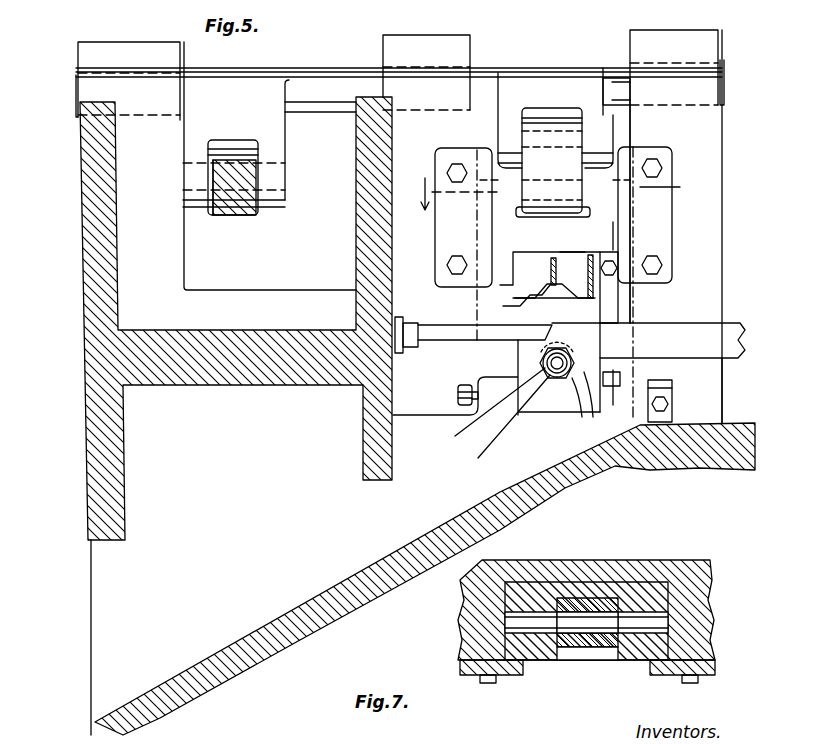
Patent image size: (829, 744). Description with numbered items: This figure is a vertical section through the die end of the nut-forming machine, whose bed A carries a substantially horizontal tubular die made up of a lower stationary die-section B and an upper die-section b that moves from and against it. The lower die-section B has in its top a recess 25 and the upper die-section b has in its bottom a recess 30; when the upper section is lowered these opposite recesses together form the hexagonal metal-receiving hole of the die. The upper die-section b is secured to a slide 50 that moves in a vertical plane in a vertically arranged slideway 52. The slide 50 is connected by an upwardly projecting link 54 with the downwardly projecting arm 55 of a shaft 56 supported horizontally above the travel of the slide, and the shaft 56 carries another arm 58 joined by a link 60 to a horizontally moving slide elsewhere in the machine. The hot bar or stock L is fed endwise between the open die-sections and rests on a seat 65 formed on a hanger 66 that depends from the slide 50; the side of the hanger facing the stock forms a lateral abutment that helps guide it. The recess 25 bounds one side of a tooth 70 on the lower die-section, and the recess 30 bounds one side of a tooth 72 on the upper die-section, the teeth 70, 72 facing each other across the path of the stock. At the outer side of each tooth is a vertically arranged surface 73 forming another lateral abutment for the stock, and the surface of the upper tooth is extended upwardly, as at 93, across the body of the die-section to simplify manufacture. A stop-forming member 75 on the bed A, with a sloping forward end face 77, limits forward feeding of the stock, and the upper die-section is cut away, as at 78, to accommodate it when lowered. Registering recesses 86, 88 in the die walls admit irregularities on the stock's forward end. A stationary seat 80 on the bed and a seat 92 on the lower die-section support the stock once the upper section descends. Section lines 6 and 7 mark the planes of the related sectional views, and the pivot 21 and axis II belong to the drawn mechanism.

In FIG. 5, the bed A is at (85, 450).
In FIG. 5, the shaft 56 is at (78, 97).
In FIG. 5, the slideway 52 is at (633, 128).
In FIG. 7, the slideway 52 is at (682, 590).
In FIG. 5, the arm 58 is at (285, 152).
In FIG. 5, the link 60 is at (238, 215).
In FIG. 5, the slide 50 is at (612, 203).
In FIG. 7, the slide 50 is at (628, 590).
In FIG. 5, the link 54 is at (617, 172).
In FIG. 7, the link 54 is at (595, 645).
In FIG. 5, the arm 55 is at (593, 118).
In FIG. 5, the section line 7— 7 is at (546, 194).
In FIG. 5, the section line 6— 6 is at (611, 312).
In FIG. 5, the recess 30 is at (550, 283).
In FIG. 5, the tooth 72 is at (580, 290).
In FIG. 5, the recess 78 is at (560, 270).
In FIG. 5, the extended surface 93 is at (593, 255).
In FIG. 5, the upper die-section b is at (567, 241).
In FIG. 5, the recess 88 is at (522, 305).
In FIG. 5, the vertically arranged surface 73 is at (615, 310).
In FIG. 5, the hanger 66 is at (659, 348).
In FIG. 5, the stop-forming member 75 is at (505, 338).
In FIG. 5, the forward end face 77 is at (558, 332).
In FIG. 5, the recess 86 is at (538, 365).
In FIG. 5, the pivot 21 is at (560, 378).
In FIG. 5, the tooth 70 is at (590, 407).
In FIG. 5, the lower die-section B is at (535, 408).
In FIG. 5, the axis II is at (538, 363).
In FIG. 5, the recess 25 is at (506, 425).
In FIG. 5, the seat 92 is at (616, 395).
In FIG. 5, the seat 65 is at (613, 357).
In FIG. 5, the hot bar or stock L is at (727, 330).
In FIG. 5, the stationary seat 80 is at (675, 392).